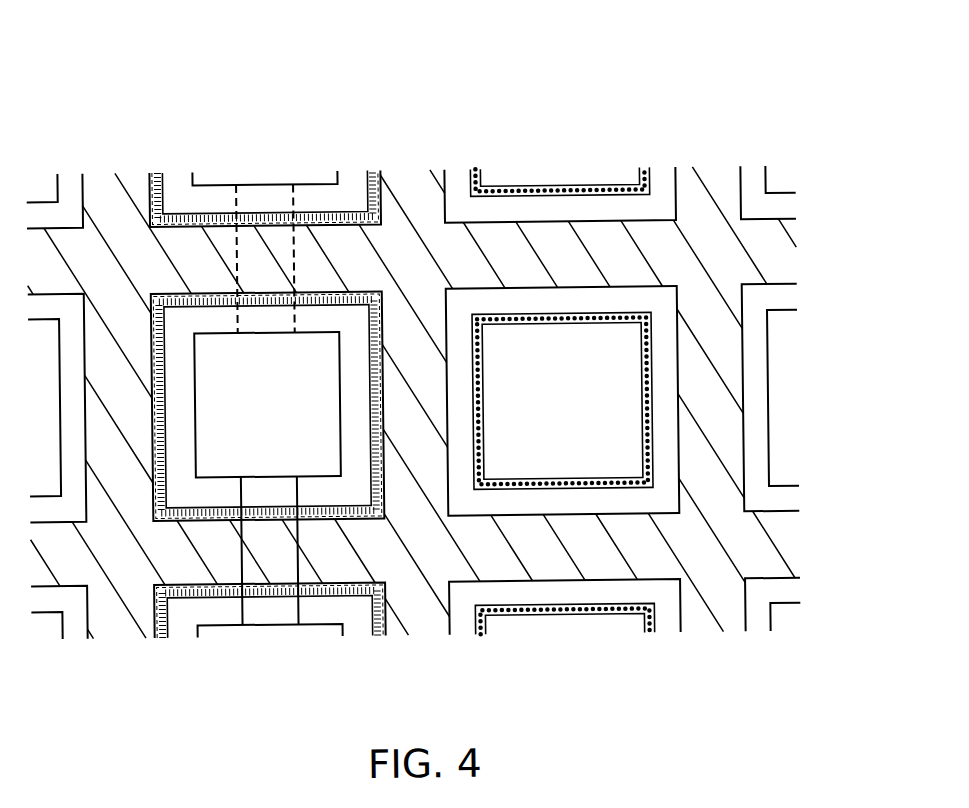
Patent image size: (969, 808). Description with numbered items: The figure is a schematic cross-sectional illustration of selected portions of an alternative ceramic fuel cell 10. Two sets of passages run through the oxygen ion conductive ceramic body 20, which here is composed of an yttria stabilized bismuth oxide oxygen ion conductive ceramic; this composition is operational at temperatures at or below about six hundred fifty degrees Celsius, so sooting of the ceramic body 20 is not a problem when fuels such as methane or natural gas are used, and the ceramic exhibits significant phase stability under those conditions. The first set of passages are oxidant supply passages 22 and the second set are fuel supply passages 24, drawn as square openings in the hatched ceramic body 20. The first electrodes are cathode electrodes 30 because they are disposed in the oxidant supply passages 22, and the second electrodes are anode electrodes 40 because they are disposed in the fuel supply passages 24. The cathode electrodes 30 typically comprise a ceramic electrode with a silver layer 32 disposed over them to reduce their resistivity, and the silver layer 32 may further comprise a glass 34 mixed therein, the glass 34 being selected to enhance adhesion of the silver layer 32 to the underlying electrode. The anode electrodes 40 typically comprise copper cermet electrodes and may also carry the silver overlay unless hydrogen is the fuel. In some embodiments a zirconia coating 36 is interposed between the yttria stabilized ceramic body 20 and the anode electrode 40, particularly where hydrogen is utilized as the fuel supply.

The ceramic fuel cell 10 is at (457, 363).
The oxygen ion conductive ceramic body 20 is at (780, 223).
The oxidant supply passages 22 is at (590, 373).
The fuel supply passages 24 is at (266, 377).
The cathode electrodes 30 is at (661, 173).
The silver layer 32 is at (477, 404).
The glass 34 is at (480, 423).
The zirconia coating 36 is at (189, 510).
The anode electrodes 40 is at (180, 174).